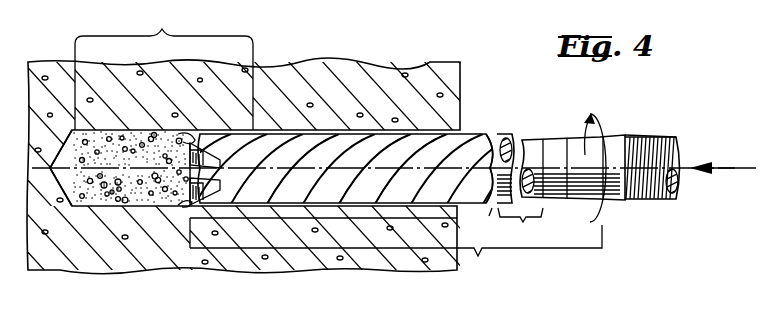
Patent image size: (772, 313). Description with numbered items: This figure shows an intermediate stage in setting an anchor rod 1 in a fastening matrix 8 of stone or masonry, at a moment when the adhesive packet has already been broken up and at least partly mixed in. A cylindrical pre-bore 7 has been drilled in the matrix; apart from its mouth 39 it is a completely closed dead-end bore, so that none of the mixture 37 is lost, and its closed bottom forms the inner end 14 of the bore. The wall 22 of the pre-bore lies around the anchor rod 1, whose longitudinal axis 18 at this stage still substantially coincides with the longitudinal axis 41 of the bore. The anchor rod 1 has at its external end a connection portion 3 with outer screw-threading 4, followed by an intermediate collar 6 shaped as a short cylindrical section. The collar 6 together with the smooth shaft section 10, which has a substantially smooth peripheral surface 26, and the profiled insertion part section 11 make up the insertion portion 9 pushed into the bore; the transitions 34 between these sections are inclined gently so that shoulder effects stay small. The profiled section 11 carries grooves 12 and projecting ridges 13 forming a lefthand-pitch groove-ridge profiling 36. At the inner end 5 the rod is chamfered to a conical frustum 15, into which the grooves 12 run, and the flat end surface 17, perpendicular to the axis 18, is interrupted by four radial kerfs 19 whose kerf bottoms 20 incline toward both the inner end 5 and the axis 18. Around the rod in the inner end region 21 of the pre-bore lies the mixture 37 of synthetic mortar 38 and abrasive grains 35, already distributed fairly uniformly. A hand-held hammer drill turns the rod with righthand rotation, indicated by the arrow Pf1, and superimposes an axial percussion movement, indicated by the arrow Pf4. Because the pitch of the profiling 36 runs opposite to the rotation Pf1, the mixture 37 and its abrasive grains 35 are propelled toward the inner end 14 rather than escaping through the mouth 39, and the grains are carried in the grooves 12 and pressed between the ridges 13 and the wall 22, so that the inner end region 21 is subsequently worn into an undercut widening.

The anchor rod 1 is at (682, 128).
The connection portion 3 is at (661, 208).
The outer screw-threading 4 is at (651, 147).
The inner end 5 is at (184, 205).
The intermediate collar 6 is at (575, 137).
The pre-bore 7 is at (339, 137).
The fastening matrix 8 is at (306, 73).
The insertion portion 9 is at (396, 255).
The smooth shaft section 10 is at (516, 229).
The profiled insertion part section 11 is at (346, 218).
The grooves 12 is at (223, 134).
The ridges 13 is at (280, 150).
The inner end of the pre-bore 14 is at (60, 198).
The conical frustum 15 is at (214, 140).
The end surface 17 is at (197, 133).
The axis 18 is at (553, 160).
The kerfs 19 is at (187, 183).
The kerf bottom 20 is at (188, 178).
The inner end region of the pre-bore 21 is at (164, 67).
The wall of the pre-bore 22 is at (380, 137).
The smooth peripheral surface 26 is at (504, 127).
The transitions 34 is at (617, 186).
The abrasive grains 35 is at (118, 186).
The groove-ridge profiling 36 is at (477, 137).
The mixture 37 is at (143, 145).
The synthetic mortar 38 is at (118, 152).
The mouth 39 is at (461, 128).
The longitudinal axis of the bore 41 is at (414, 134).
The arrow indicating direction of rotation Pf1 is at (612, 153).
The arrow indicating axial percussion movement Pf4 is at (722, 162).